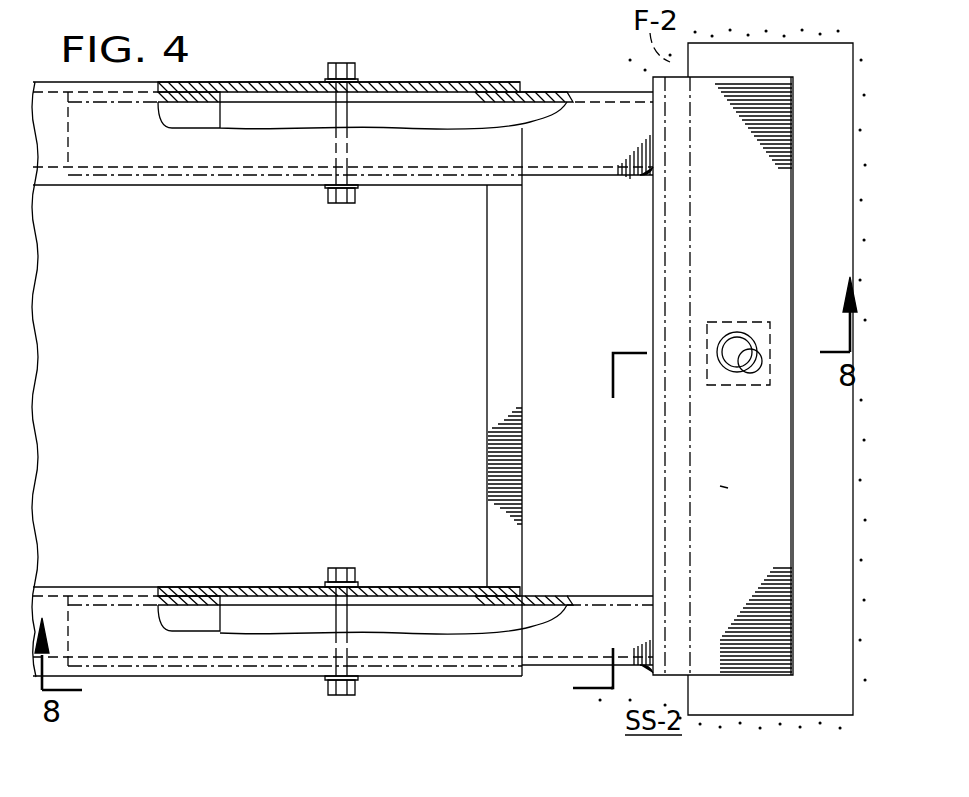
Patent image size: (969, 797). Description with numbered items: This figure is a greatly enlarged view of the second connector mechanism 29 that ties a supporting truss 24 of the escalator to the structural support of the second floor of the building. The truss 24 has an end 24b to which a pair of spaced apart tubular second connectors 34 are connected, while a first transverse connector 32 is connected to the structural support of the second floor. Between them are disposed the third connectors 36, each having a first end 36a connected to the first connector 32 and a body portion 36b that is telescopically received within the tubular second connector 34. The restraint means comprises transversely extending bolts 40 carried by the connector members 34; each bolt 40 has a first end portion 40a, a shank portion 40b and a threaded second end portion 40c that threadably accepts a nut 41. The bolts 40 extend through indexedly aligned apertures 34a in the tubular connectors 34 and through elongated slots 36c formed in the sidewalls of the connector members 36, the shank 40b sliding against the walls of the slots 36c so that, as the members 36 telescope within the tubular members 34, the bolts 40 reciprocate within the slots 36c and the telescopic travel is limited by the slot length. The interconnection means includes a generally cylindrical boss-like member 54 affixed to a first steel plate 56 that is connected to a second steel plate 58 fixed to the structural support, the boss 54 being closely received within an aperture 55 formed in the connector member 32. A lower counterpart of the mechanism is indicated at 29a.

The supporting truss 24 is at (487, 334).
The second end of truss 24b is at (53, 152).
The second connector mechanism 29 is at (548, 78).
The lower beam 29a is at (548, 668).
The first transverse connector 32 is at (723, 376).
The second connector 34 is at (447, 80).
The aperture 34a is at (320, 97).
The third connector 36 is at (598, 88).
The first end of third connector 36a is at (616, 143).
The body portion of third connector 36b is at (190, 110).
The elongated slot 36c is at (218, 108).
The bolt 40 is at (334, 62).
The first end portion of bolt 40a is at (349, 68).
The shank portion of bolt 40b is at (338, 118).
The threaded second end portion of bolt 40c is at (362, 190).
The nut 41 is at (339, 204).
The boss-like member 54 is at (733, 345).
The aperture 55 is at (745, 370).
The first steel plate 56 is at (727, 385).
The second steel plate 58 is at (728, 488).